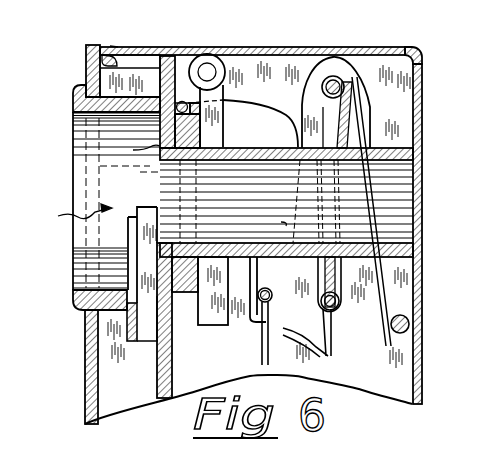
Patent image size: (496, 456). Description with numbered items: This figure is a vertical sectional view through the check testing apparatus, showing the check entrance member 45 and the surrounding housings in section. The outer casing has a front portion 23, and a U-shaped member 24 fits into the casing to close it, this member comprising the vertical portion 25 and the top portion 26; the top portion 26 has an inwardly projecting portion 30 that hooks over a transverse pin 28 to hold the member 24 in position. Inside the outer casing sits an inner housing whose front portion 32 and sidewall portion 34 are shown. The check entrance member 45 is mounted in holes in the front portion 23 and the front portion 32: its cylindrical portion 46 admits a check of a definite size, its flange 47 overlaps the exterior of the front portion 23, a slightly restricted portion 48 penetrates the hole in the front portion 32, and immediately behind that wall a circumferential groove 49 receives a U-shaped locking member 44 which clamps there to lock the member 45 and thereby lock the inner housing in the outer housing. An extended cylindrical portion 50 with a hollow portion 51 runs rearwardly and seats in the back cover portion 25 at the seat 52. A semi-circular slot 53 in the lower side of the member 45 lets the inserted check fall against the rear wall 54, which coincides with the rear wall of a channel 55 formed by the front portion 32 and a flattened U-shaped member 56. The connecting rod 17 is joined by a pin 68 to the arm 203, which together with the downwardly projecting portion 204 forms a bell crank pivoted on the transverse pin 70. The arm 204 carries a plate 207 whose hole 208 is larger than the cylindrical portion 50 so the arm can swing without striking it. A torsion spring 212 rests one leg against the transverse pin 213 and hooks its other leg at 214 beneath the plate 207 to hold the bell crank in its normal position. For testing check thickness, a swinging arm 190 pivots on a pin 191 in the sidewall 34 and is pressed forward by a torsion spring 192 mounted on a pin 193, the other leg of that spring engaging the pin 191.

The connecting rod 17 is at (222, 130).
The front portion 23 is at (118, 45).
The member 24 is at (423, 108).
The vertical portion 25 is at (421, 131).
The top portion 26 is at (366, 49).
The pin 28 is at (117, 46).
The inwardly projecting portion 30 is at (112, 46).
The front portion 32 is at (176, 56).
The sidewall portion 34 is at (370, 360).
The locking member 44 is at (199, 98).
The check entrance member 45 is at (72, 214).
The cylindrical portion 46 is at (48, 272).
The flange 47 is at (80, 86).
The restricted portion 48 is at (163, 90).
The circumferential groove 49 is at (210, 308).
The extended cylindrical portion 50 is at (258, 127).
The hollow portion 51 is at (286, 201).
The seat 52 is at (420, 156).
The semi-circular slot 53 is at (150, 222).
The rear wall 54 is at (136, 148).
The channel 55 is at (158, 318).
The flattened U-shaped member 56 is at (118, 342).
The pin 68 is at (212, 70).
The pin 70 is at (339, 80).
The swinging arm 190 is at (262, 345).
The pin 191 is at (271, 283).
The torsion spring 192 is at (229, 316).
The pin 193 is at (267, 220).
The arm 203 is at (277, 70).
The downwardly projecting portion 204 is at (333, 334).
The plate 207 is at (362, 88).
The hole 208 is at (355, 126).
The torsion spring 212 is at (390, 310).
The transverse pin 213 is at (410, 322).
The hook 214 is at (337, 285).